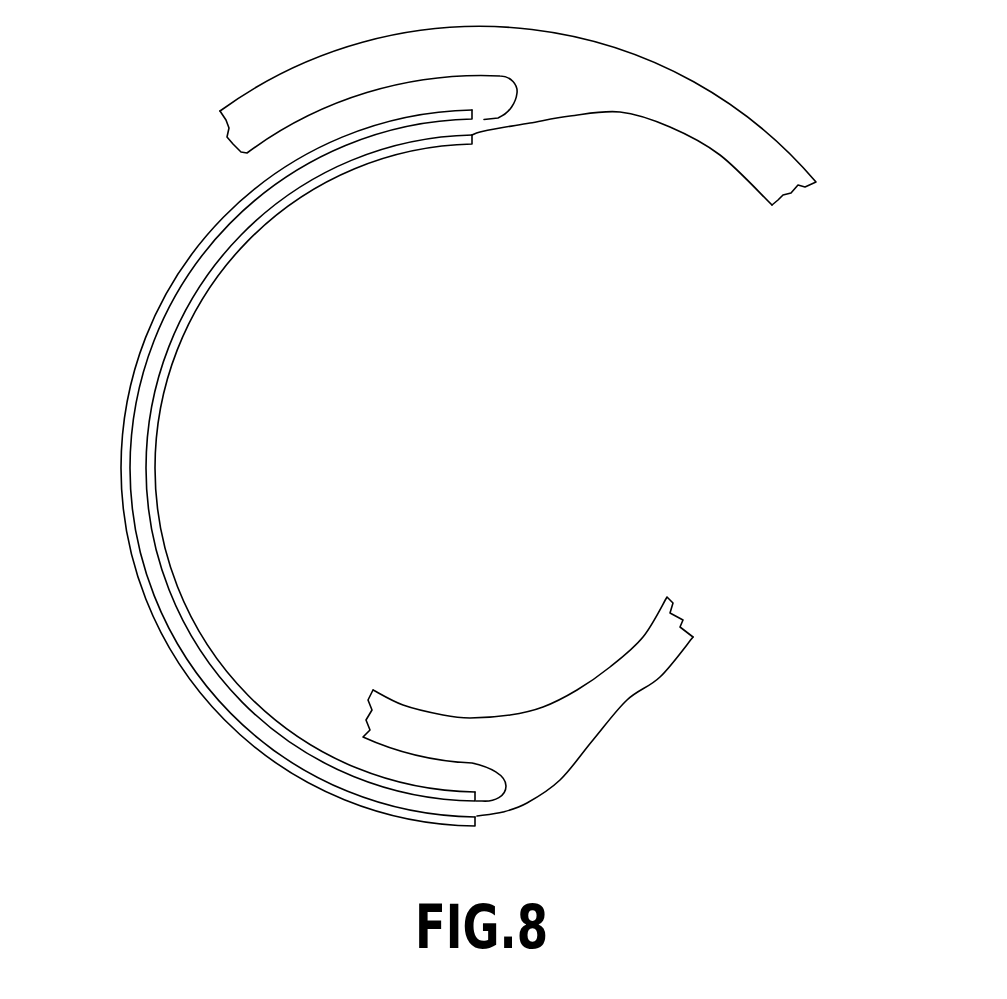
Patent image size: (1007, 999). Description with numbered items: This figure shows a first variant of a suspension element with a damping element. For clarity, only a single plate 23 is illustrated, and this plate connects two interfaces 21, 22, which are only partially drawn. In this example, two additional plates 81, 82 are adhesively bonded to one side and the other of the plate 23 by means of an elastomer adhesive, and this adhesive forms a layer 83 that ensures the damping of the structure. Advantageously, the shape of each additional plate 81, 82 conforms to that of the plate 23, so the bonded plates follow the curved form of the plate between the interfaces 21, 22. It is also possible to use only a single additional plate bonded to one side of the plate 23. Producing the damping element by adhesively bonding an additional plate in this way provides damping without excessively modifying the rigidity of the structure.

The interface 21 is at (747, 137).
The interface 22 is at (458, 730).
The plate 23 is at (141, 493).
The additional plate 81 is at (197, 303).
The additional plate 82 is at (173, 290).
The layer 83 is at (132, 422).